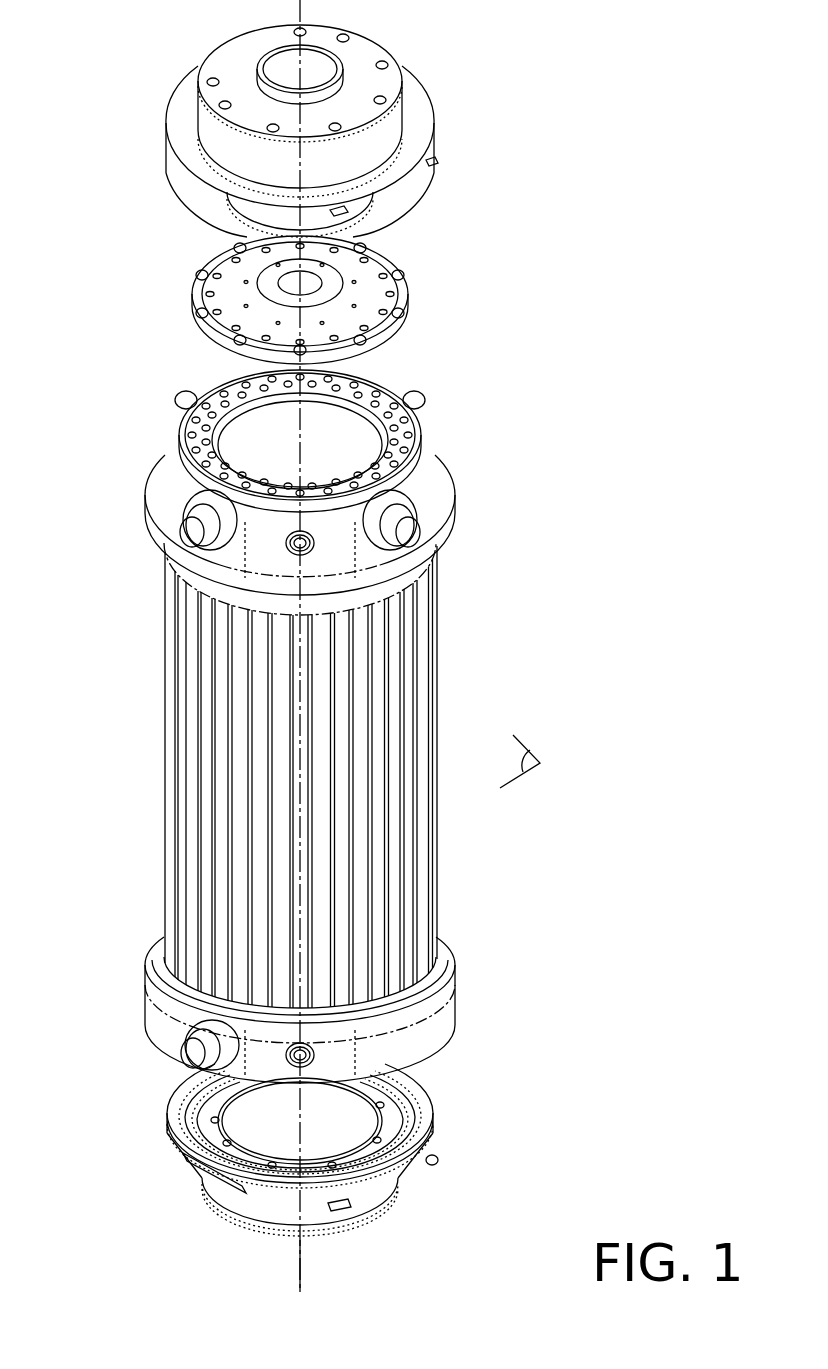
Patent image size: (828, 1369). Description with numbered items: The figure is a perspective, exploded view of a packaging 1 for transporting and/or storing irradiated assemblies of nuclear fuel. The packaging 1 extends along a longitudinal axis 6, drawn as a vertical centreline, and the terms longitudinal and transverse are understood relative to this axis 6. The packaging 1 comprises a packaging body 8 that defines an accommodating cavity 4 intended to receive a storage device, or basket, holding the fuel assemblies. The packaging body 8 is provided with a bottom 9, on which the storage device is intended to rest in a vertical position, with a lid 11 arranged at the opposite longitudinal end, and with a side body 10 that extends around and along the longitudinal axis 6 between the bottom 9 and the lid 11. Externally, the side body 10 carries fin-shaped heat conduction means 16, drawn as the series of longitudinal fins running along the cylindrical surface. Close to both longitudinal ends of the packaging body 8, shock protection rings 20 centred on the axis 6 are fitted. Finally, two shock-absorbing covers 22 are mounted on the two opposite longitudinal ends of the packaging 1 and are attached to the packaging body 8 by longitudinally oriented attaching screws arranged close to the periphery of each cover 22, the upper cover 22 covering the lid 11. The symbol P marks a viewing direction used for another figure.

The packaging 1 is at (329, 646).
The accommodating cavity 4 is at (348, 448).
The longitudinal axis 6 is at (298, 1275).
The packaging body 8 is at (164, 761).
The bottom 9 is at (428, 995).
The side body 10 is at (408, 667).
The lid 11 is at (386, 286).
The fin-shaped heat conduction means 16 is at (472, 775).
The shock protection rings 20 is at (158, 502).
The shock-absorbing covers 22 is at (424, 64).
The viewing direction P is at (533, 755).